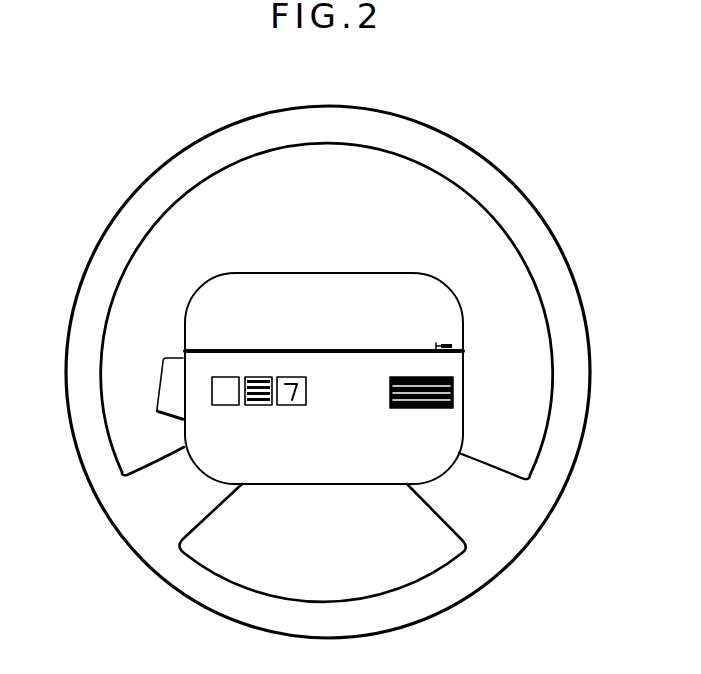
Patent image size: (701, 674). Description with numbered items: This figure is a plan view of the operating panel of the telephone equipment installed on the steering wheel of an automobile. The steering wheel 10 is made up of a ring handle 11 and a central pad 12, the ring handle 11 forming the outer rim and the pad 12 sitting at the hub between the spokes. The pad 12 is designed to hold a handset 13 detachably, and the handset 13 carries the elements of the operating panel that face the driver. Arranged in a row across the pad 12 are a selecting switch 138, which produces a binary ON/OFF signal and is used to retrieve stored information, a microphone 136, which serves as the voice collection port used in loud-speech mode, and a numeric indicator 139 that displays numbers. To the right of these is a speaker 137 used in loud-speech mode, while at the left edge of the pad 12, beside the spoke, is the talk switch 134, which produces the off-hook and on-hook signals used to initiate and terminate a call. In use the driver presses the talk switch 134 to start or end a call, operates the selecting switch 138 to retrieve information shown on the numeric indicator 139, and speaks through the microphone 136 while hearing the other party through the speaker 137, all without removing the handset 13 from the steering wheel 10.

The steering wheel 10 is at (517, 167).
The ring handle 11 is at (537, 241).
The pad 12 is at (438, 312).
The handset 13 is at (450, 370).
The talk switch 134 is at (158, 412).
The microphone 136 is at (262, 407).
The speaker 137 is at (437, 408).
The selecting switch 138 is at (228, 407).
The numeric indicator 139 is at (302, 407).